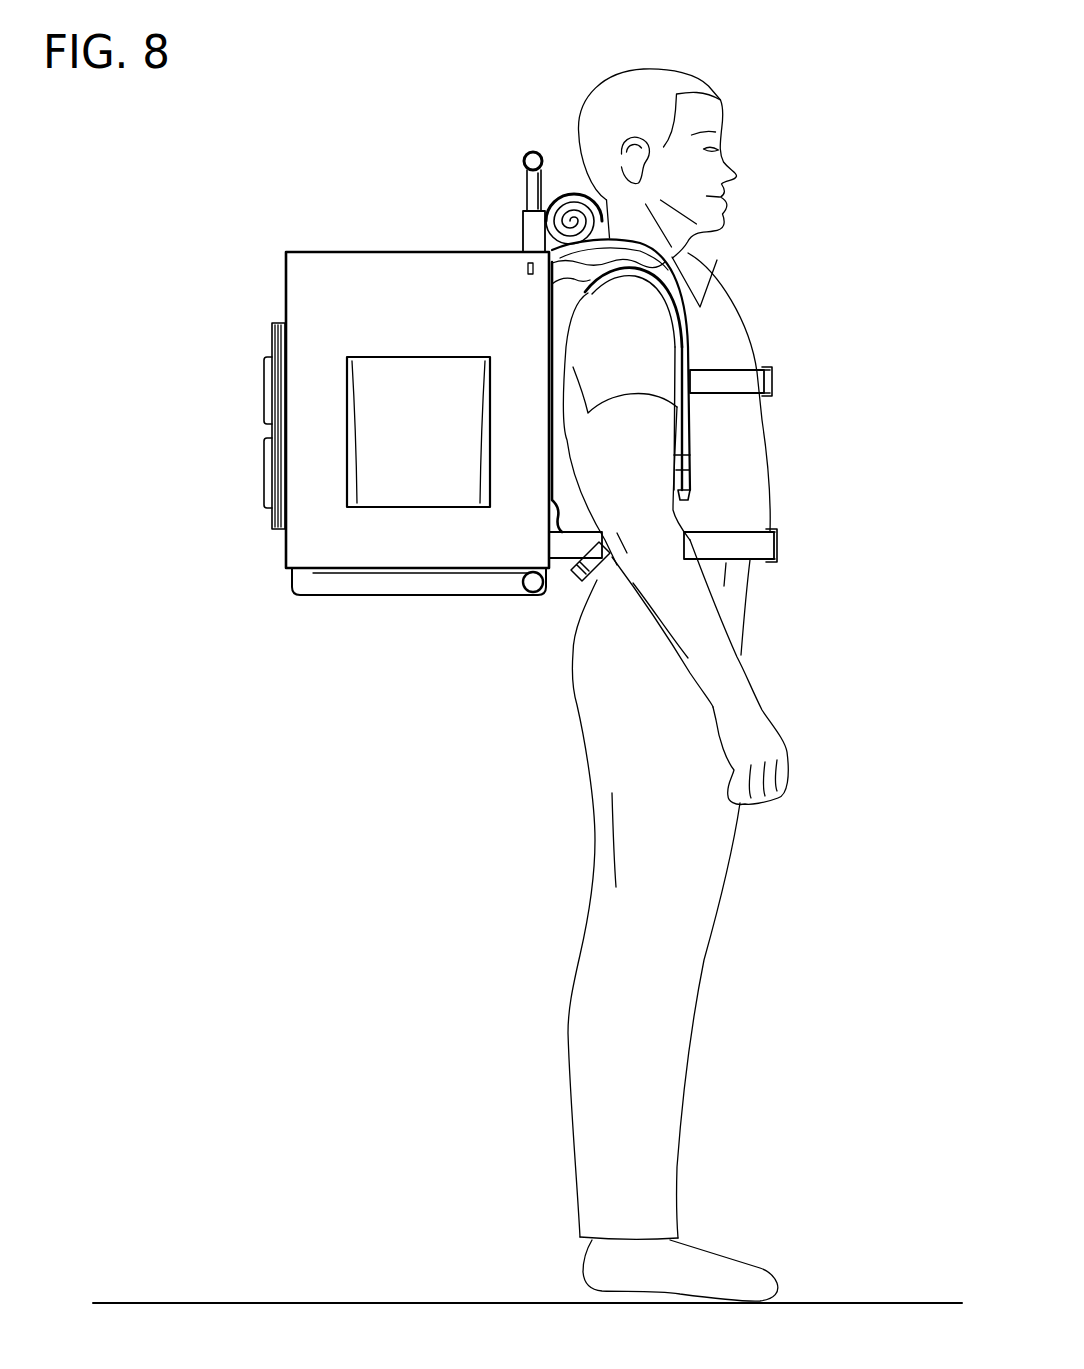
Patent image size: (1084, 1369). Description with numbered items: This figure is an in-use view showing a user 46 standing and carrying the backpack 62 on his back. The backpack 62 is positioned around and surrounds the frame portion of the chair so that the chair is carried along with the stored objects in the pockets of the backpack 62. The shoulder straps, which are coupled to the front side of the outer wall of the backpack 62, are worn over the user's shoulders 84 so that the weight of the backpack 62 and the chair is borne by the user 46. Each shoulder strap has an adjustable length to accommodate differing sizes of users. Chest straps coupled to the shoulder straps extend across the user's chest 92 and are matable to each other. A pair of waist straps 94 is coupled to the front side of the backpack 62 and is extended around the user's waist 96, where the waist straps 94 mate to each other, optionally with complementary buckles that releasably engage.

The backpack 62 is at (325, 283).
The user's shoulders 84 is at (645, 297).
The user's chest 92 is at (674, 351).
The user's waist 96 is at (739, 570).
The user 46 is at (710, 928).
The waist straps 94 is at (313, 1303).